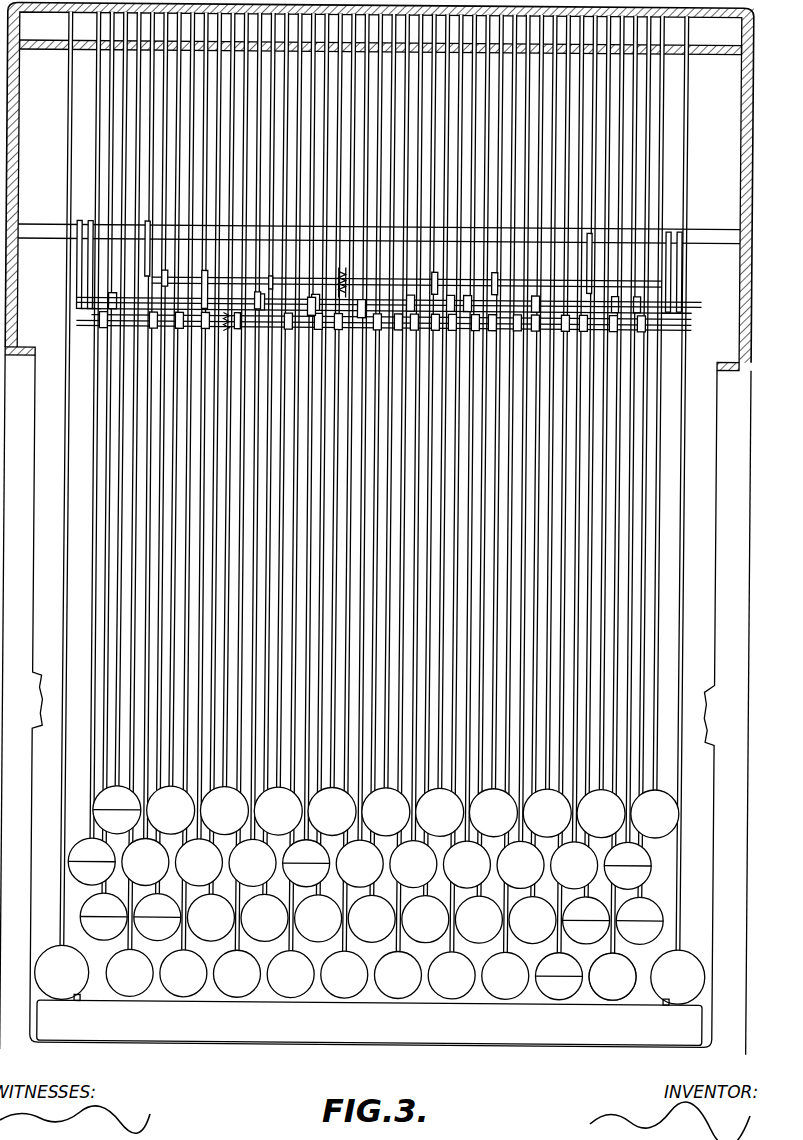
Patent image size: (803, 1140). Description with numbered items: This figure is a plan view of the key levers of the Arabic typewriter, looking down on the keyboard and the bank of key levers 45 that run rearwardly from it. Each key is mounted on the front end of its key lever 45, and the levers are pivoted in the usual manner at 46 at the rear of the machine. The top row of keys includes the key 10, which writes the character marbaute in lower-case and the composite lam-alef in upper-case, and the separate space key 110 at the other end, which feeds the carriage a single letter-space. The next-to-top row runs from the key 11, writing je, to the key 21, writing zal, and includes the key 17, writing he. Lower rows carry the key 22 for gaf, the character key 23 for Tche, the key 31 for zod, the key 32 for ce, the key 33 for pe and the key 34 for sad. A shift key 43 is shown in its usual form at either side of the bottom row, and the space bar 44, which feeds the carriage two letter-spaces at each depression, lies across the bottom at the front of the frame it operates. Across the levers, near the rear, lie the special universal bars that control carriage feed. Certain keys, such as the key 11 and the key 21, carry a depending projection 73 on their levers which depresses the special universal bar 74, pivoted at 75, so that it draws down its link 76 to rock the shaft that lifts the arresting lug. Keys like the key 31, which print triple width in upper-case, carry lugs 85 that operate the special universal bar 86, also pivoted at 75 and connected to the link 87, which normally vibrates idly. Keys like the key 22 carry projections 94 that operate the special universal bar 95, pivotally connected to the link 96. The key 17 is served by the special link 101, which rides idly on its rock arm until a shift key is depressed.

The key 10 is at (99, 800).
The key 11 is at (654, 852).
The key 17 is at (290, 872).
The key 21 is at (73, 872).
The key 22 is at (648, 904).
The key 23 is at (578, 942).
The key 31 is at (150, 938).
The key 32 is at (92, 940).
The key 33 is at (630, 992).
The key 34 is at (580, 992).
The shift key 43 is at (40, 982).
The space bar 44 is at (369, 1019).
The key levers 45 is at (128, 600).
The pivot 46 is at (86, 52).
The depending projection 73 is at (148, 330).
The special universal bar 74 is at (80, 308).
The pivot 75 is at (40, 232).
The link 76 is at (226, 332).
The lugs 85 is at (270, 292).
The special universal bar 86 is at (146, 252).
The link 87 is at (352, 290).
The projections 94 is at (106, 306).
The special universal bar 95 is at (88, 272).
The link 96 is at (362, 320).
The special link 101 is at (310, 298).
The space key 110 is at (684, 800).